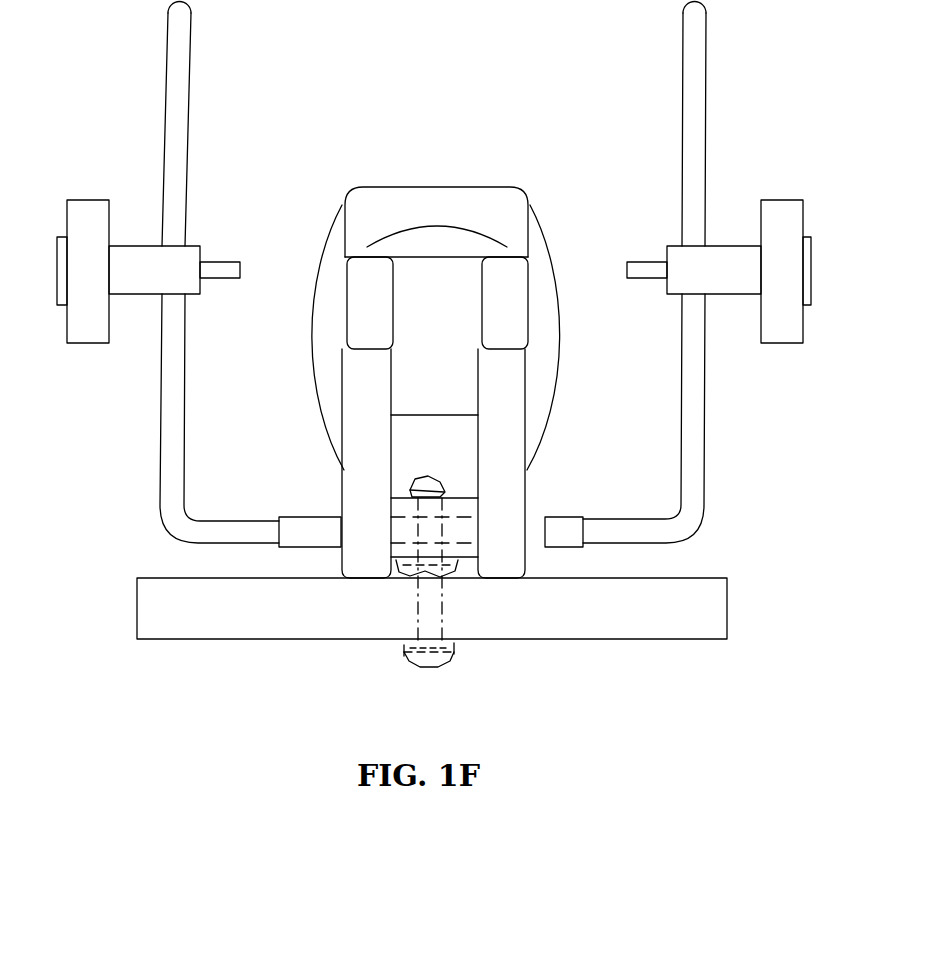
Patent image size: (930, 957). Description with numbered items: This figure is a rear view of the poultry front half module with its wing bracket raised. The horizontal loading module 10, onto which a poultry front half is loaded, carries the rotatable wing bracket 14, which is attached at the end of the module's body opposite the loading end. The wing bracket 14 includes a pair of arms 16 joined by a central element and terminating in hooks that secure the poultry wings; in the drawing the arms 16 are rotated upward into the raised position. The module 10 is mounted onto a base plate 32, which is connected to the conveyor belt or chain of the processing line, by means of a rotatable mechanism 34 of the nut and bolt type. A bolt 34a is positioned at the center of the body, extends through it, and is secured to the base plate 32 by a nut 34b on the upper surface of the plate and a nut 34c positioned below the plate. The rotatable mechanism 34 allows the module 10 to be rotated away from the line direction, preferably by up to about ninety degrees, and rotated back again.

The horizontal loading module 10 is at (398, 166).
The wing bracket 14 is at (151, 98).
The arms 16 is at (160, 405).
The base plate 32 is at (152, 608).
The rotatable mechanism 34 is at (393, 597).
The bolt 34a is at (415, 478).
The nut 34b is at (405, 563).
The nut 34c is at (450, 653).